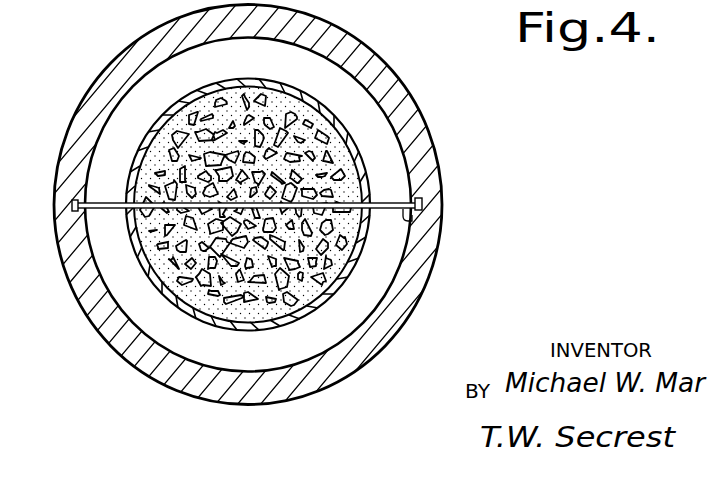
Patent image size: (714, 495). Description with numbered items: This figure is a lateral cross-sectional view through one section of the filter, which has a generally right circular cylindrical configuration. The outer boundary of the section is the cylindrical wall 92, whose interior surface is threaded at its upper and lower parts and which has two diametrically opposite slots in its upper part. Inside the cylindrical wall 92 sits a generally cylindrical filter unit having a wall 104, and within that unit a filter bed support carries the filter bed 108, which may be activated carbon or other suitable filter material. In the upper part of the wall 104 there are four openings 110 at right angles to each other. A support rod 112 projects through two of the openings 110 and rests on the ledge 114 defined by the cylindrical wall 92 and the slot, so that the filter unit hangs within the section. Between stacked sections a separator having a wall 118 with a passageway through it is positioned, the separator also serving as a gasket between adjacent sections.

The cylindrical wall 92 is at (418, 112).
The wall 104 is at (314, 322).
The filter bed 108 is at (157, 115).
The openings 110 is at (252, 80).
The support rod 112 is at (412, 220).
The ledge 114 is at (70, 212).
The wall 118 is at (152, 316).